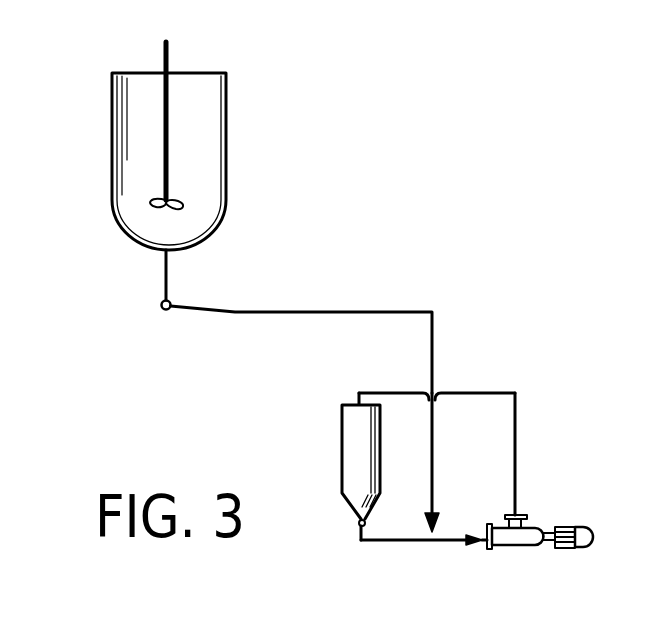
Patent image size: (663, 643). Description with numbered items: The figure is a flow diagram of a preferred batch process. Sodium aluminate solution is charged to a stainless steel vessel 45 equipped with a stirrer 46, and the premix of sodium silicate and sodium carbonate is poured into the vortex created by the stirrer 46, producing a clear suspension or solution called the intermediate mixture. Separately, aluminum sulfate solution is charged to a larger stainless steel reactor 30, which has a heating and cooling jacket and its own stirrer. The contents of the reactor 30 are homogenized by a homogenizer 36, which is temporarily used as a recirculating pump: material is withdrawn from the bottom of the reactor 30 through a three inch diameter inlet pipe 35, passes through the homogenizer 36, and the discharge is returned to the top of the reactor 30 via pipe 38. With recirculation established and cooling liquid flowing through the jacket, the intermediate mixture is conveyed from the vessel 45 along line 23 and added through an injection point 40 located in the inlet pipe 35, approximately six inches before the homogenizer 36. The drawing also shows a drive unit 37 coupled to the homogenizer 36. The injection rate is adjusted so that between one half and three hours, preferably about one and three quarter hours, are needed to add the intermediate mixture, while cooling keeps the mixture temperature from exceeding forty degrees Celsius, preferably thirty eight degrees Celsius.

The intermediate mixture feed line 23 is at (390, 312).
The stainless steel reactor 30 is at (350, 430).
The inlet pipe 35 is at (395, 541).
The homogenizer 36 is at (512, 547).
The motor 37 is at (587, 547).
The return pipe 38 is at (515, 462).
The injection point 40 is at (432, 472).
The stainless steel vessel 45 is at (113, 172).
The stirrer 46 is at (168, 114).